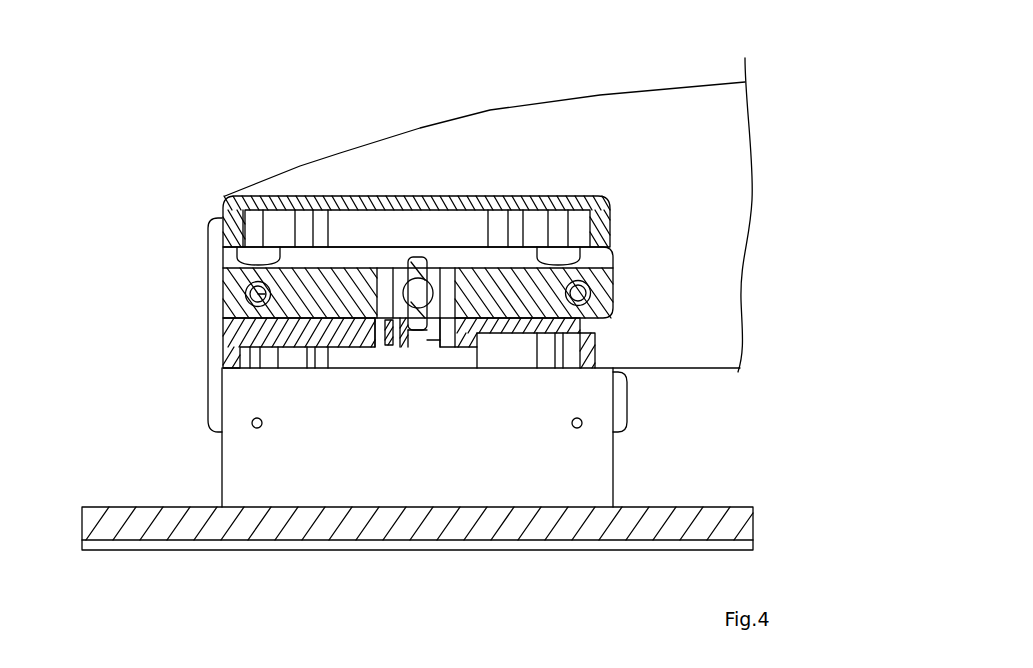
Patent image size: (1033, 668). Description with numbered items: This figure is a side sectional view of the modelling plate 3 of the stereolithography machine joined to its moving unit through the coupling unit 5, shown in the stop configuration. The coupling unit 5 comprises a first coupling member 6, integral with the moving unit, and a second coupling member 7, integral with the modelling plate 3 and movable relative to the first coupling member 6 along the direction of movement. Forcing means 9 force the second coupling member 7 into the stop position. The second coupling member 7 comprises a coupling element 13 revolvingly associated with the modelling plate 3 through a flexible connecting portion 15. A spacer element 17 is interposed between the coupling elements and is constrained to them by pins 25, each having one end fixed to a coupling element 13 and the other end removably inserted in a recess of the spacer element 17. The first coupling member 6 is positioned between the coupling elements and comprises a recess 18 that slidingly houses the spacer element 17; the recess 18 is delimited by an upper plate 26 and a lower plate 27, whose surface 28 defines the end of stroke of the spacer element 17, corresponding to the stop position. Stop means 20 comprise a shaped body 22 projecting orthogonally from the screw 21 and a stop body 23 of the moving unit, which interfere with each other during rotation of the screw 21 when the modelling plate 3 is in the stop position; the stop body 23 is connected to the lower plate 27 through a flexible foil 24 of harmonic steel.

The modelling plate 3 is at (118, 525).
The coupling unit 5 is at (215, 198).
The first coupling member 6 is at (683, 117).
The second coupling member 7 is at (612, 268).
The forcing means 9 is at (258, 252).
The coupling element 13 is at (208, 282).
The connecting portion 15 is at (218, 468).
The spacer element 17 is at (604, 313).
The recess 18 is at (450, 243).
The stop means 20 is at (415, 253).
The screw 21 is at (430, 280).
The shaped body 22 is at (418, 312).
The stop body 23 is at (391, 334).
The flexible foil 24 is at (426, 350).
The pin 25 is at (258, 294).
The upper plate 26 is at (538, 197).
The lower plate 27 is at (507, 328).
The surface 28 is at (292, 322).